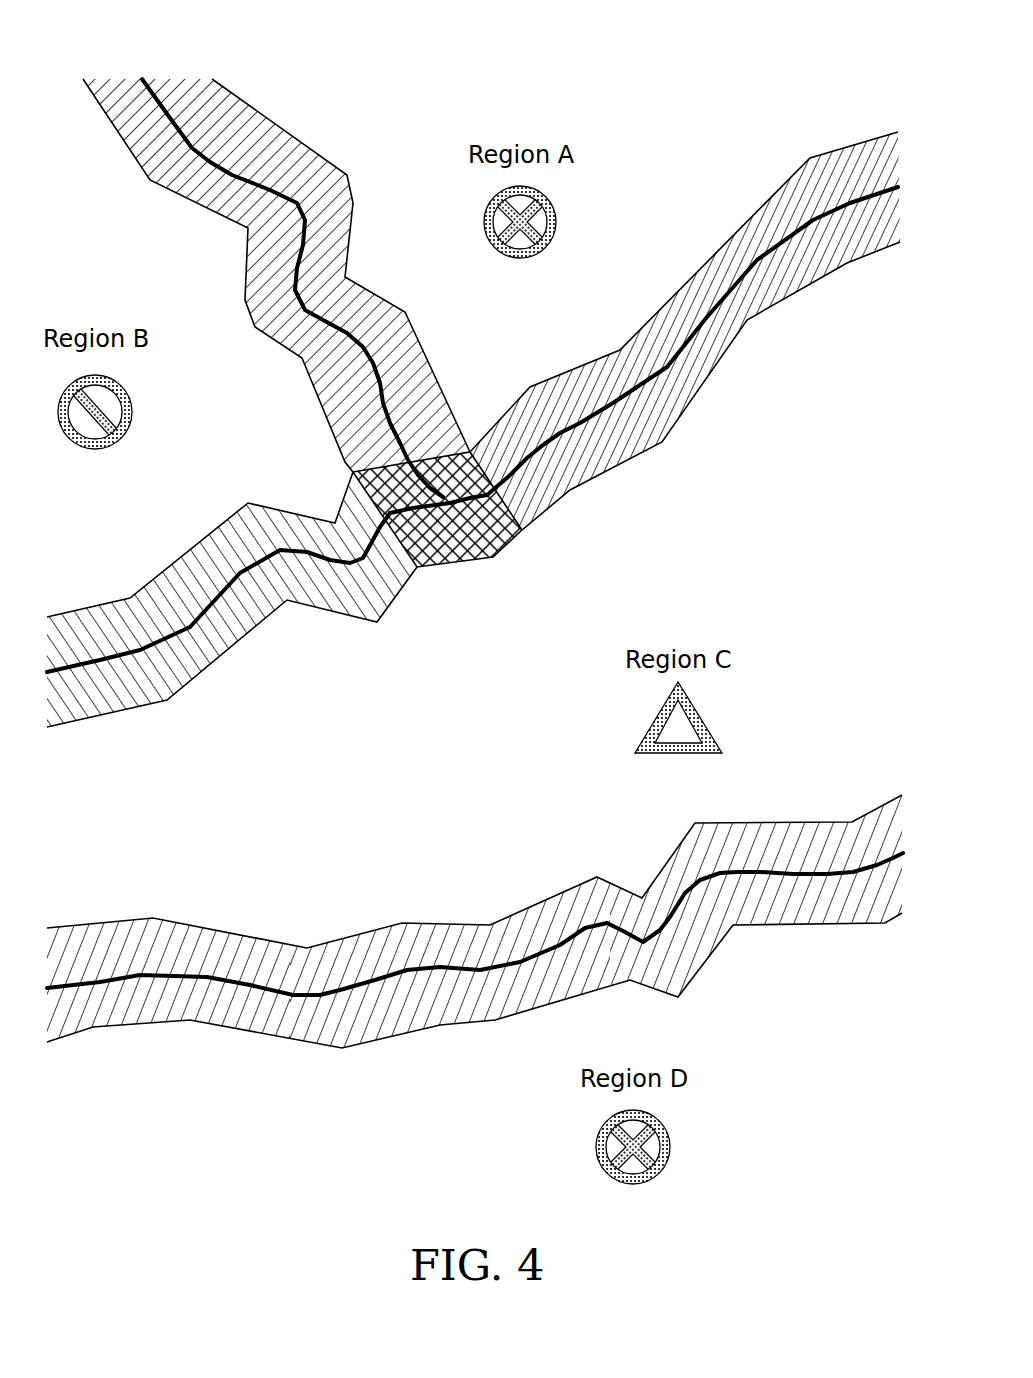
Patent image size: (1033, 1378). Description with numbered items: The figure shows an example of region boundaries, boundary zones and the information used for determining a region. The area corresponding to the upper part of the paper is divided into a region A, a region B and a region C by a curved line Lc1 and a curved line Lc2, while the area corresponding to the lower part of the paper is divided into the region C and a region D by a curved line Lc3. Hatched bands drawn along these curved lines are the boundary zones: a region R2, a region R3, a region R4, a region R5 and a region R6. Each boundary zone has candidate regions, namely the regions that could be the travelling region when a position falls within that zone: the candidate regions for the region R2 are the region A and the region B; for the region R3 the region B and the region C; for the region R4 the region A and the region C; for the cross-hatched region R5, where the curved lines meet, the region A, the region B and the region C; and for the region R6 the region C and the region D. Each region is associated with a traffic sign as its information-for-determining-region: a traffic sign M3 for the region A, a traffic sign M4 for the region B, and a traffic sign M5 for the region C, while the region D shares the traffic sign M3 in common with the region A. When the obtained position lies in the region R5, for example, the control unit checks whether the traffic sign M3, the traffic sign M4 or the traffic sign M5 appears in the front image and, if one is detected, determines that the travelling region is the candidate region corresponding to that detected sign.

The curved line Lc1 is at (912, 193).
The curved line Lc2 is at (137, 70).
The curved line Lc3 is at (922, 859).
The region R2 is at (277, 140).
The region R3 is at (172, 562).
The region R4 is at (693, 403).
The region R5 is at (485, 556).
The region R6 is at (708, 953).
The traffic sign M3 is at (556, 221).
The traffic sign M4 is at (132, 413).
The traffic sign M5 is at (703, 717).